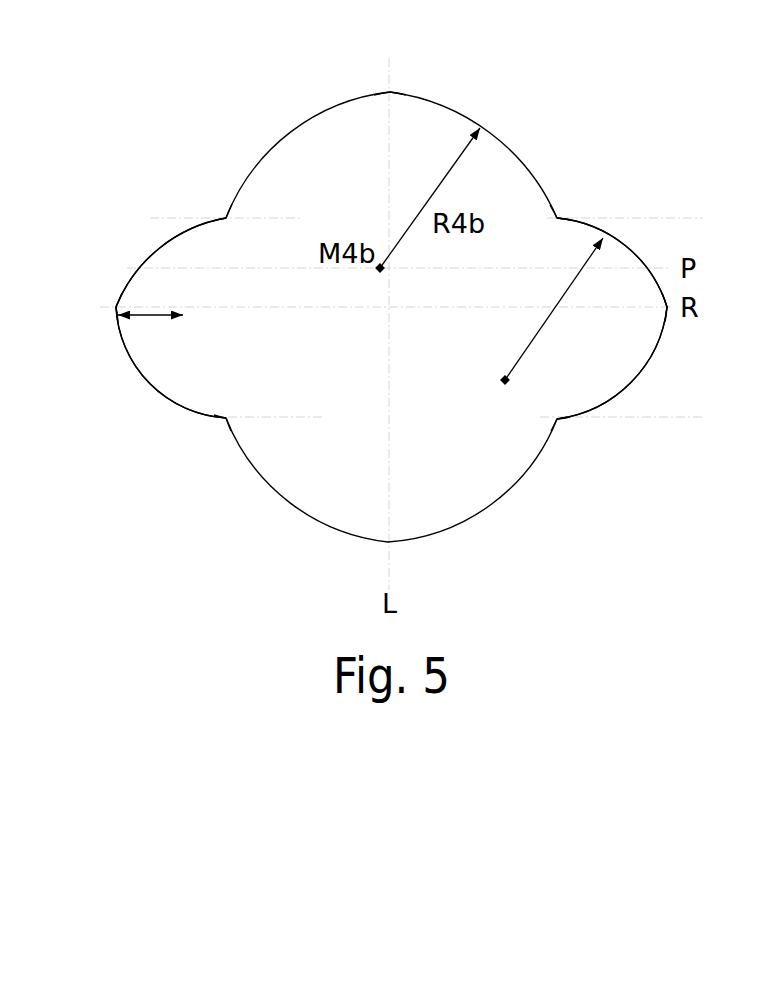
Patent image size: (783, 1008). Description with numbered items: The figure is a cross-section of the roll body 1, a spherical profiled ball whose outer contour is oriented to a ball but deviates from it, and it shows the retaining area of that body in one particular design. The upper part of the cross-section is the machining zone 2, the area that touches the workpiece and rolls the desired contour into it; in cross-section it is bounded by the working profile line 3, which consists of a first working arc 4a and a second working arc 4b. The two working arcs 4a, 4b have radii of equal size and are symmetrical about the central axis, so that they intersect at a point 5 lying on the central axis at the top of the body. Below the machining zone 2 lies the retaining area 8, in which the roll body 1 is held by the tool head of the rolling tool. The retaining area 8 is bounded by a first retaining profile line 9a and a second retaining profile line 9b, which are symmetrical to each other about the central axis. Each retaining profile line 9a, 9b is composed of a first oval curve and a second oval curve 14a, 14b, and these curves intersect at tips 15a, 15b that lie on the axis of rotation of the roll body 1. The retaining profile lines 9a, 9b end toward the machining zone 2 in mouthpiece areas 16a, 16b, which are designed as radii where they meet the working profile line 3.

The roll body 1 is at (297, 92).
The machining zone 2 is at (718, 50).
The working profile line 3 is at (293, 133).
The first working arc 4a is at (263, 148).
The second working arc 4b is at (504, 140).
The point 5 is at (391, 92).
The retaining area 8 is at (718, 222).
The first retaining profile line 9a is at (150, 252).
The second retaining profile line 9b is at (151, 381).
The first oval curve 14a is at (418, 227).
The second oval curve 14b is at (423, 391).
The tip 15a is at (116, 308).
The tip 15b is at (668, 310).
The mouthpiece area 16a is at (226, 218).
The mouthpiece area 16b is at (558, 216).